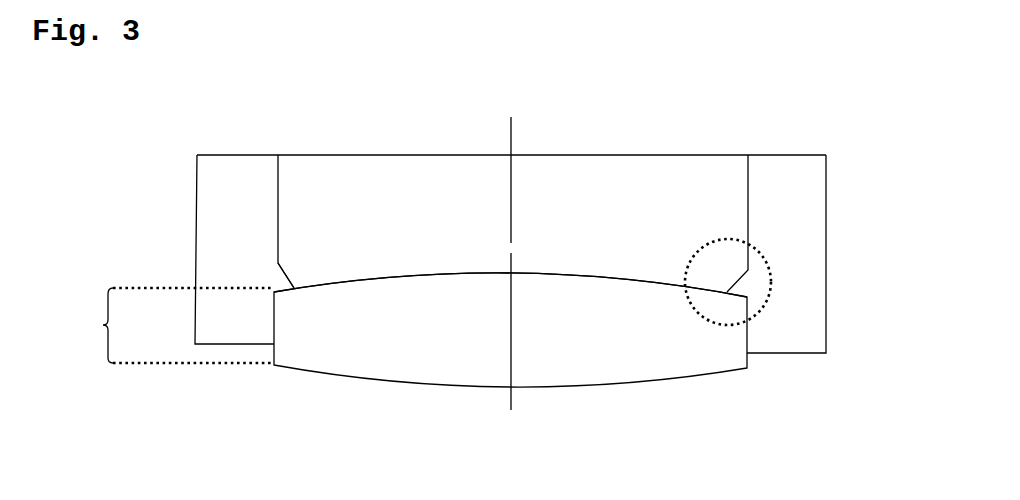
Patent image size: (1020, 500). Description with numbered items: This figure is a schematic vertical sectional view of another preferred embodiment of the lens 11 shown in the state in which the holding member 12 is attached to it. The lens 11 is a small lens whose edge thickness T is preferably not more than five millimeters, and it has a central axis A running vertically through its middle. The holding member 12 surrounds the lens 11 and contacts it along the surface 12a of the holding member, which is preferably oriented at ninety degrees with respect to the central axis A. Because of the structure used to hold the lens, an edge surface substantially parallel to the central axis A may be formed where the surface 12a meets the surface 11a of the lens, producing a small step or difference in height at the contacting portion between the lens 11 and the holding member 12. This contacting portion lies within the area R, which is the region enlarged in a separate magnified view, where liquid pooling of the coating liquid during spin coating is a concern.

The lens 11 is at (645, 372).
The surface of the lens 11a is at (563, 273).
The holding member 12 is at (212, 192).
The surface of the holding member 12a is at (286, 266).
The central axis A is at (511, 353).
The edge thickness T is at (175, 325).
The area R is at (757, 313).